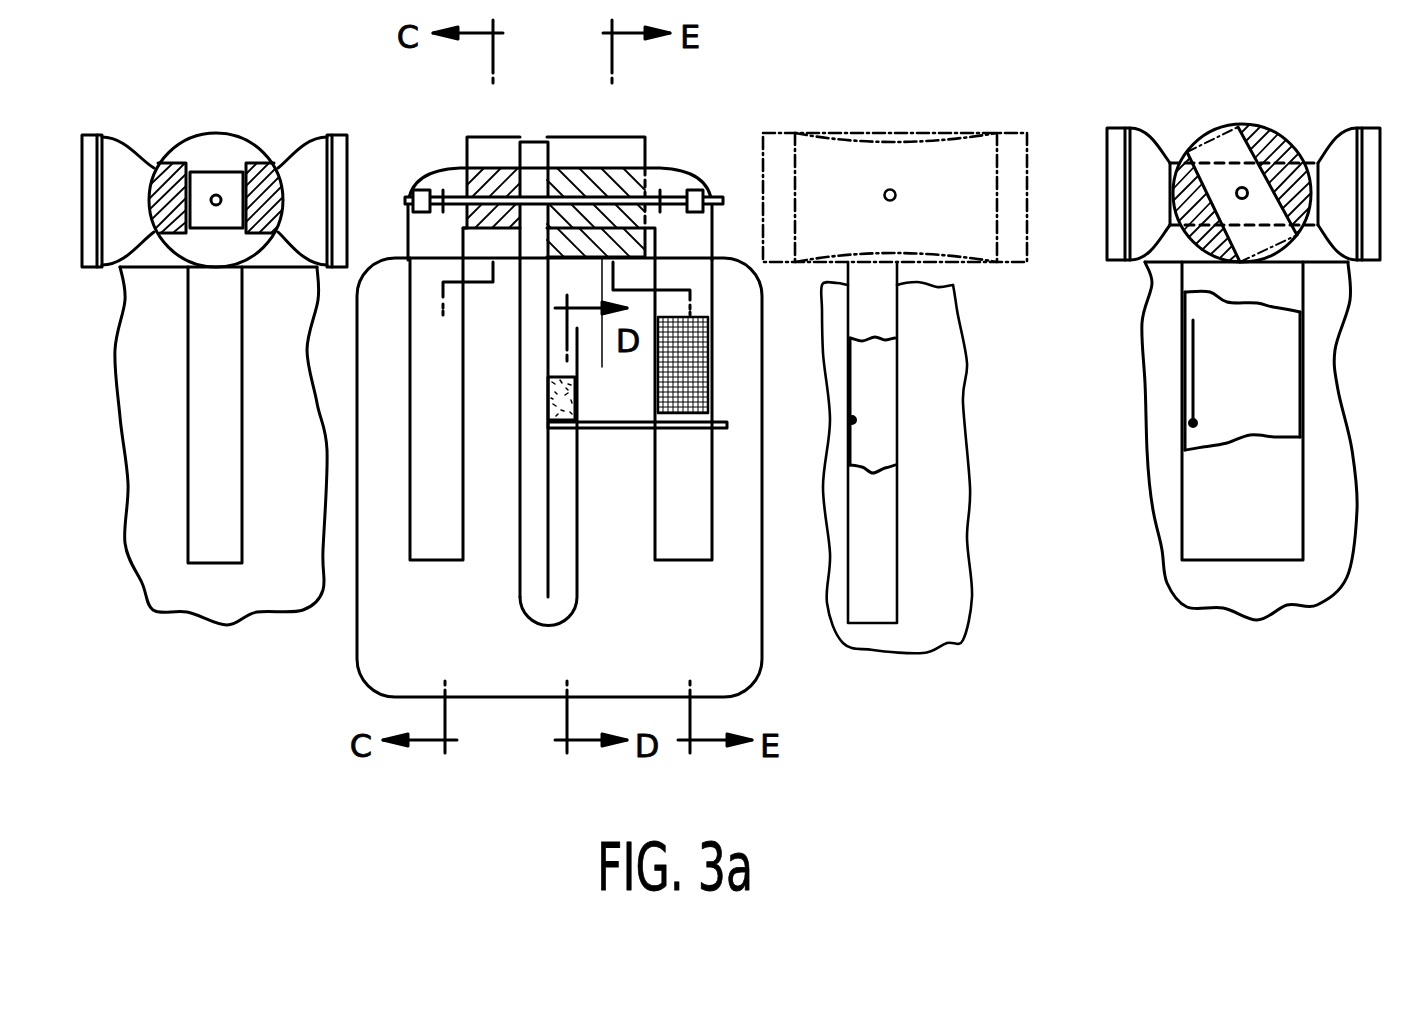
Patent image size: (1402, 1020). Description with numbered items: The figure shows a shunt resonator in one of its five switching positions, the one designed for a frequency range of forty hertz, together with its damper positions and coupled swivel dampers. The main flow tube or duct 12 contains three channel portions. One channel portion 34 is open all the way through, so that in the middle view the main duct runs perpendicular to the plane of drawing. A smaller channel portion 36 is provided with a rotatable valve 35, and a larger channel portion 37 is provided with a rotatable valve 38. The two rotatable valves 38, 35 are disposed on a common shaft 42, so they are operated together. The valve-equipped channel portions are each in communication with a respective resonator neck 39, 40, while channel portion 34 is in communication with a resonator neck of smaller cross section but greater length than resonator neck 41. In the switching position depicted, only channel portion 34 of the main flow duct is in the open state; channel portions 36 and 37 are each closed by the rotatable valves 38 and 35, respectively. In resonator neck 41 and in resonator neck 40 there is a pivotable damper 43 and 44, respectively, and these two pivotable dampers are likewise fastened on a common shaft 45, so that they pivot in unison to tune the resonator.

The main flow duct 12 is at (552, 125).
The channel portion 34 is at (532, 152).
The rotatable valve 35 is at (178, 143).
The smaller channel portion 36 is at (253, 150).
The larger channel portion 37 is at (628, 138).
The rotatable valve 38 is at (1272, 150).
The resonator neck 39 is at (430, 480).
The resonator neck 40 is at (687, 522).
The resonator neck 41 is at (547, 513).
The common shaft 42 is at (713, 188).
The pivotable damper 43 is at (550, 417).
The pivotable damper 44 is at (697, 350).
The common shaft 45 is at (727, 422).